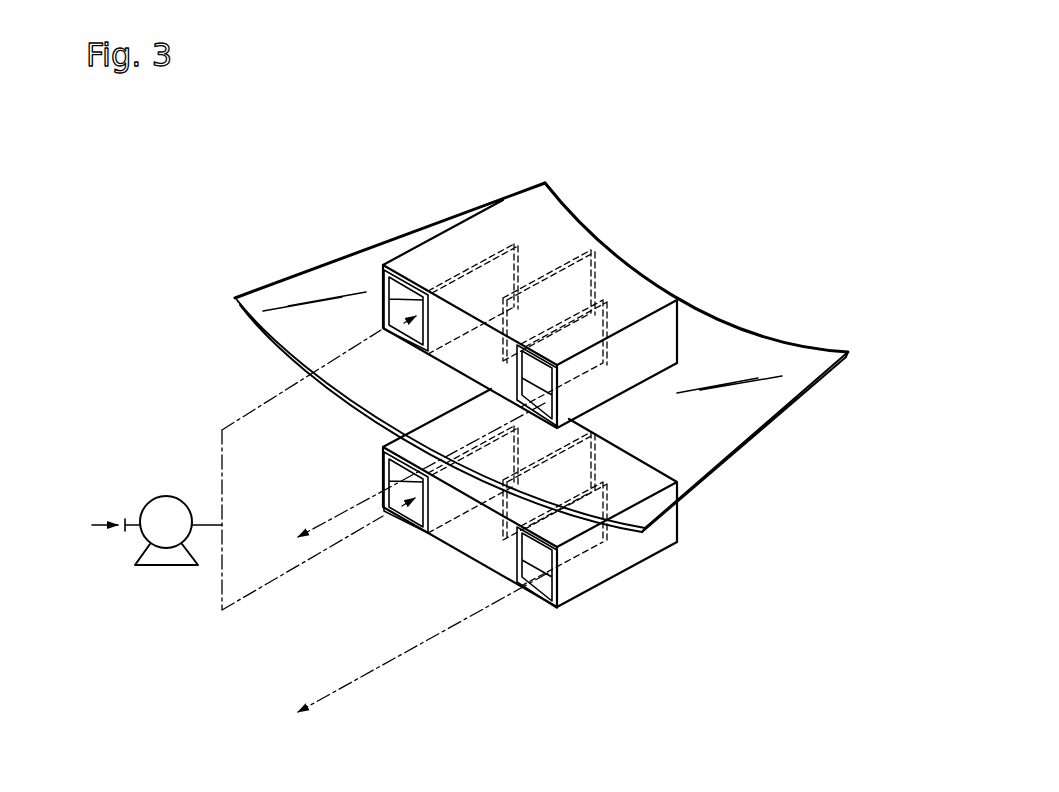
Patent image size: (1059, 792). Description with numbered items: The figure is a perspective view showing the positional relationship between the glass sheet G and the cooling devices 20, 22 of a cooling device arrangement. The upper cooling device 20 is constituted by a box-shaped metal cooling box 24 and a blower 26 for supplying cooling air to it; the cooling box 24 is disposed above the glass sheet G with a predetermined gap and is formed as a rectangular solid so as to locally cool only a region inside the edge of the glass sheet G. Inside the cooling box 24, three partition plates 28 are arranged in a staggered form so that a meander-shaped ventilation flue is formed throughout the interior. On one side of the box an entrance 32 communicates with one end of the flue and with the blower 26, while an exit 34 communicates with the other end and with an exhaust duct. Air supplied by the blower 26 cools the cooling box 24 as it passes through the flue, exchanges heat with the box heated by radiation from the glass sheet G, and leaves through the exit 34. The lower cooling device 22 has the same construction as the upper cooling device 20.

The glass sheet G is at (405, 253).
The cooling device 20 is at (550, 257).
The cooling device 22 is at (473, 535).
The cooling box 24 is at (465, 221).
The blower 26 is at (167, 497).
The partition plates 28 is at (486, 257).
The entrance 32 is at (398, 300).
The exit 34 is at (550, 405).